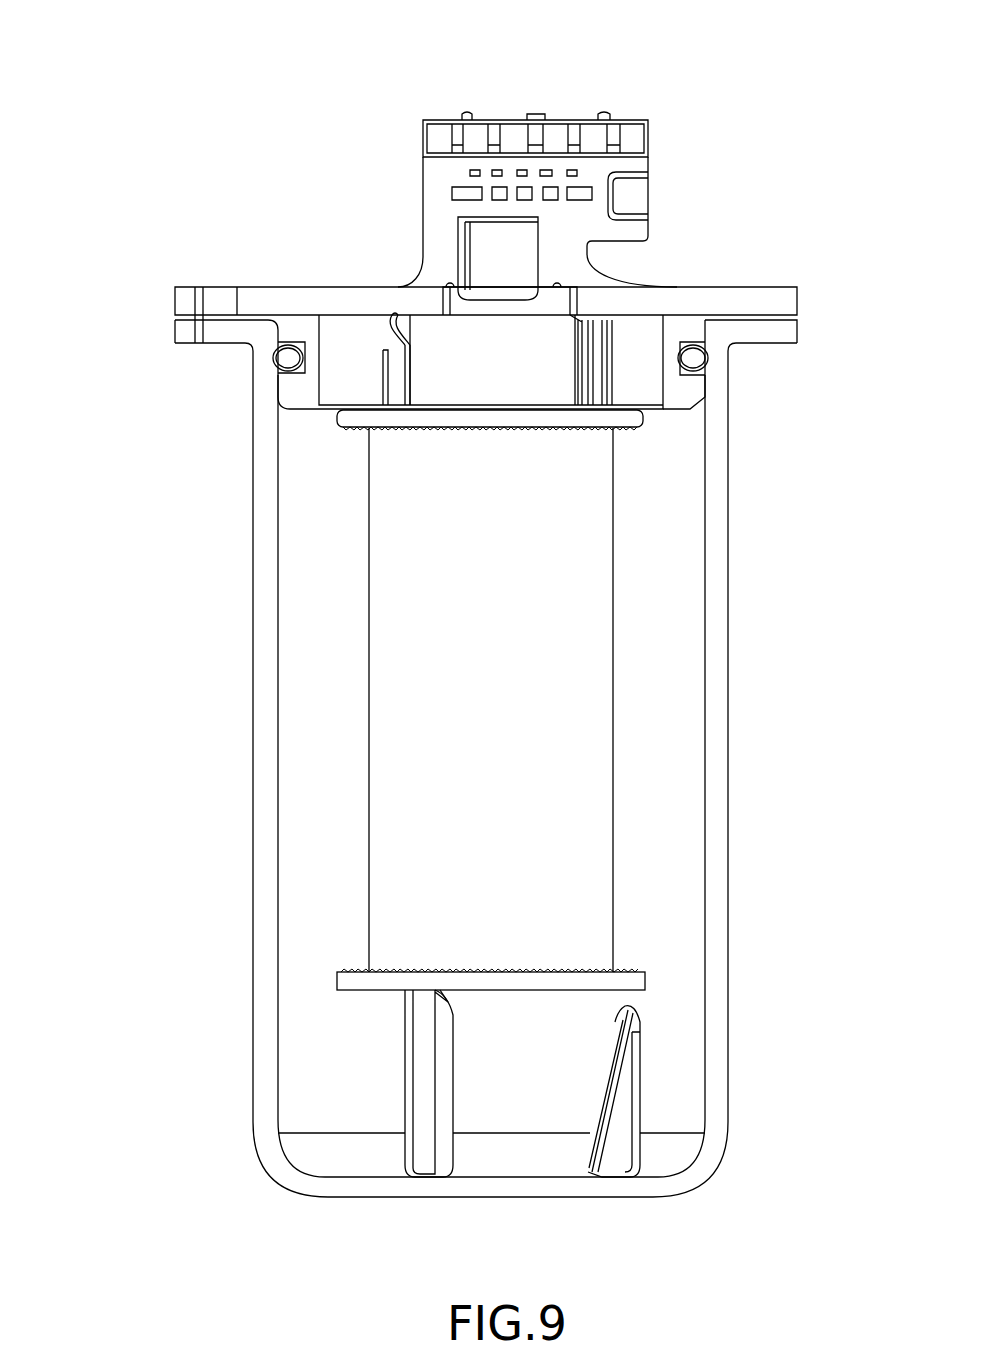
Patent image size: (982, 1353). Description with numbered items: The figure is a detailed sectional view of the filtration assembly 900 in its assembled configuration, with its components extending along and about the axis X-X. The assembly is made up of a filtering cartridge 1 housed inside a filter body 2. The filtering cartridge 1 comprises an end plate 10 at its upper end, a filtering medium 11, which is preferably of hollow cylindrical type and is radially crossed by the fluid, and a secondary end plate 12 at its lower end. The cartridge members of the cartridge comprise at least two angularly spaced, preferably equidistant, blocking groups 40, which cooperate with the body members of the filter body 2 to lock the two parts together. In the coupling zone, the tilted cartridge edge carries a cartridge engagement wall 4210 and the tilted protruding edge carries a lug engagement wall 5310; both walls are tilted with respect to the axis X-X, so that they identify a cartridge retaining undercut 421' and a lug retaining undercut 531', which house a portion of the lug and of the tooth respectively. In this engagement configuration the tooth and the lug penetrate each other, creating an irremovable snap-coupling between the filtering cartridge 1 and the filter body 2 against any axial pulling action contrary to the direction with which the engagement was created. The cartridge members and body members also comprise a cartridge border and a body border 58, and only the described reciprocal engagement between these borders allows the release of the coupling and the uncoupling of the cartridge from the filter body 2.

The filtration assembly 900 is at (812, 94).
The filtering cartridge 1 is at (499, 700).
The filter body 2 is at (238, 943).
The end plate 10 is at (632, 421).
The filtering medium 11 is at (580, 675).
The secondary end plate 12 is at (635, 982).
The blocking group 40 is at (398, 364).
The body border 58 is at (620, 348).
The cartridge retaining undercut 421' is at (387, 380).
The cartridge engagement wall 4210 is at (396, 313).
The lug retaining undercut 531' is at (271, 296).
The lug engagement wall 5310 is at (392, 401).